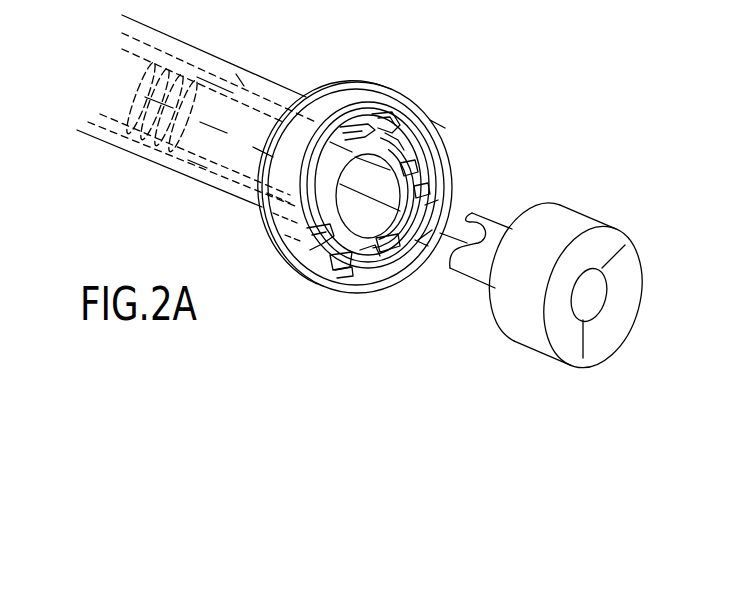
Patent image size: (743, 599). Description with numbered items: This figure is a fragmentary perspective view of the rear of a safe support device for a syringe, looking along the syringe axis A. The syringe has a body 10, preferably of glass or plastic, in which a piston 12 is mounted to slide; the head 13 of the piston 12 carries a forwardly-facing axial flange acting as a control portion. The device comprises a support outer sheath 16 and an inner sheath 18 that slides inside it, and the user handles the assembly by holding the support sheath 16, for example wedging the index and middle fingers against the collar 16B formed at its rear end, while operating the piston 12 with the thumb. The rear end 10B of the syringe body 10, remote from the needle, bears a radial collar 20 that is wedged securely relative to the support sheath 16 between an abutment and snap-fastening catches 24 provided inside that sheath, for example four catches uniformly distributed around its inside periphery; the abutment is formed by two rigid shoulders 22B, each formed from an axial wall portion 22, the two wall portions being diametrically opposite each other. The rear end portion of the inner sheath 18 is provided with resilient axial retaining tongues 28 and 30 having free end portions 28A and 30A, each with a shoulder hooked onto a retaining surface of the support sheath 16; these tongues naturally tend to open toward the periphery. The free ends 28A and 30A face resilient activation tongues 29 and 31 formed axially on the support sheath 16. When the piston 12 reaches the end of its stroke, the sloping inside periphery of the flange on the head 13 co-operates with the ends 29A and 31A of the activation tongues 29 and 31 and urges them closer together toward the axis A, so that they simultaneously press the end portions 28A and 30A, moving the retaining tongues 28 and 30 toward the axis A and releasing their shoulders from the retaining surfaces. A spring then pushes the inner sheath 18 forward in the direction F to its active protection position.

The body 10 is at (192, 183).
The support outer sheath 16 is at (212, 60).
The inner sheath 18 is at (238, 78).
The axis A is at (115, 83).
The rear end 10B is at (449, 149).
The collar 16B is at (454, 129).
The radial collar 20 is at (340, 158).
The axial retaining tongue 28 is at (370, 111).
The resilient activation tongue 29 is at (392, 117).
The end of activation tongue 29A is at (402, 132).
The free end portion 28A is at (412, 153).
The snap-fastening catches 24 is at (448, 166).
The axial wall portion 22 is at (440, 201).
The rigid shoulder 22B is at (423, 247).
The axial retaining tongue 30 is at (315, 264).
The resilient activation tongue 31 is at (337, 285).
The end of activation tongue 31A is at (362, 281).
The free end portion 30A is at (372, 265).
The piston 12 is at (488, 254).
The head 13 is at (604, 206).
The direction F is at (660, 332).